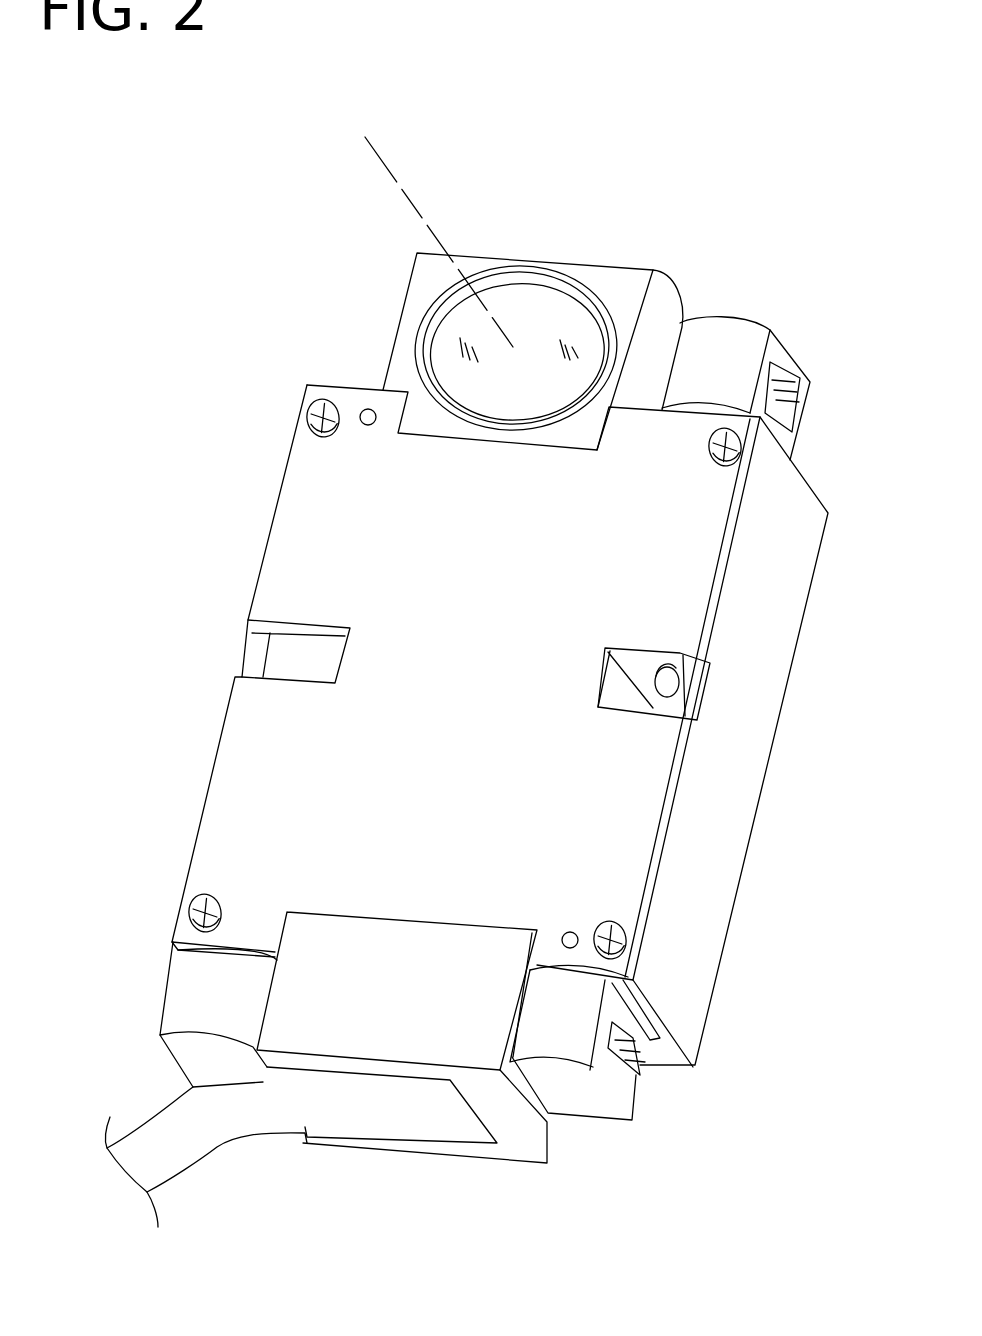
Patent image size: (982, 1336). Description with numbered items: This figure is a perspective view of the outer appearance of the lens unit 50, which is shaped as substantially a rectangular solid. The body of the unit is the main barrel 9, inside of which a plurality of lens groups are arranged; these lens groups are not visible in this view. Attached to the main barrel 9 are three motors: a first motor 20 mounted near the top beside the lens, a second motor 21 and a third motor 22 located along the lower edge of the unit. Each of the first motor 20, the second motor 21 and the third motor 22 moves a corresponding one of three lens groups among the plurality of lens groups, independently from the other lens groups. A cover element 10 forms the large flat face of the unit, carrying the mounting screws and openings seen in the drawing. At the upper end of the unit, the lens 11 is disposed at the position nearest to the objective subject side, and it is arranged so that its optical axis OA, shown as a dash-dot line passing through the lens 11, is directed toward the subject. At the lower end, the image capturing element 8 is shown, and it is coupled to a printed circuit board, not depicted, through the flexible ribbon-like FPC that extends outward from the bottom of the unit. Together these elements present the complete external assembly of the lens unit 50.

The lens unit 50 is at (565, 208).
The optical axis OA is at (390, 160).
The lens 11 is at (560, 305).
The first motor 20 is at (727, 330).
The cover element 10 is at (283, 563).
The main barrel 9 is at (723, 905).
The third motor 22 is at (183, 997).
The image capturing element 8 is at (370, 1083).
The second motor 21 is at (588, 1098).
The flexible printed circuit FPC is at (212, 1142).